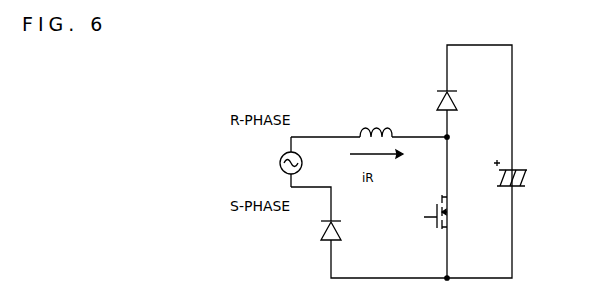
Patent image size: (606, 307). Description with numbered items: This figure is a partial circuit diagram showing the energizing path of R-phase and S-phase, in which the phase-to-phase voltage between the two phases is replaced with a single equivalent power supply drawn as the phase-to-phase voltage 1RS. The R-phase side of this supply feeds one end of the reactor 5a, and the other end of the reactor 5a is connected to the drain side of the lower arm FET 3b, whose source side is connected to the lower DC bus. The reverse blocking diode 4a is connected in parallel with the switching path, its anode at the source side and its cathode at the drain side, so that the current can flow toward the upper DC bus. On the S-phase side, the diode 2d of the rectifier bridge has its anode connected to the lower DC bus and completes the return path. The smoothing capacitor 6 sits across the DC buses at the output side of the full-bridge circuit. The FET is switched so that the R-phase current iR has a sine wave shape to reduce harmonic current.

The phase-to-phase voltage 1RS is at (280, 158).
The diode 2d is at (322, 238).
The FET 3b is at (432, 236).
The reverse blocking diode 4a is at (433, 100).
The reactor 5a is at (368, 126).
The smoothing capacitor 6 is at (523, 162).